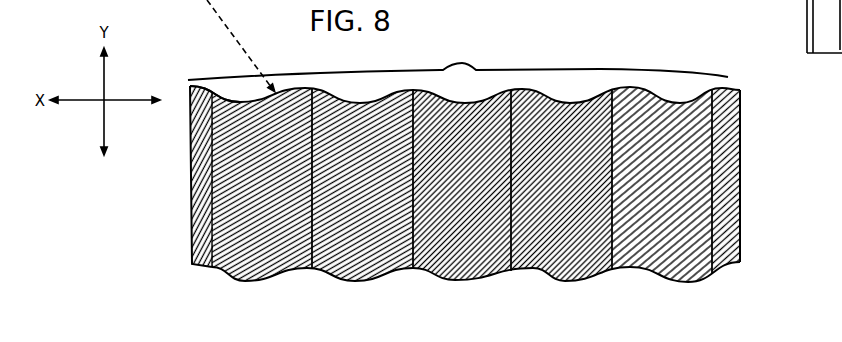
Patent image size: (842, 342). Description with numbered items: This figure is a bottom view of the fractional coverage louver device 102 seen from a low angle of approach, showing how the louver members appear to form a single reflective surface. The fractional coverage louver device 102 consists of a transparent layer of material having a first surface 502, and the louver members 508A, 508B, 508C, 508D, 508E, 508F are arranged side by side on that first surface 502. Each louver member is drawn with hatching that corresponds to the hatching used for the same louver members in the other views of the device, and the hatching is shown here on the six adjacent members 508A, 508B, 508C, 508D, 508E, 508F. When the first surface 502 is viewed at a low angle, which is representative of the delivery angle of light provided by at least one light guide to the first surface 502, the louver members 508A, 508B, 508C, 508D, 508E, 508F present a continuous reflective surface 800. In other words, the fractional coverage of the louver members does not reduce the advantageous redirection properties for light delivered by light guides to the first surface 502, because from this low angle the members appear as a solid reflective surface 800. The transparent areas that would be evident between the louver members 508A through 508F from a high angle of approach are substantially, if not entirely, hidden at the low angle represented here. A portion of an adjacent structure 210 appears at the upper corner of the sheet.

The fractional coverage louver device 102 is at (206, 77).
The continuous reflective surface 800 is at (458, 62).
The first surface 502 is at (213, 268).
The louver member 508A is at (264, 272).
The louver member 508B is at (376, 270).
The louver member 508C is at (471, 269).
The louver member 508D is at (581, 269).
The louver member 508E is at (687, 268).
The louver member 508F is at (728, 252).
The housing 210 is at (810, 42).